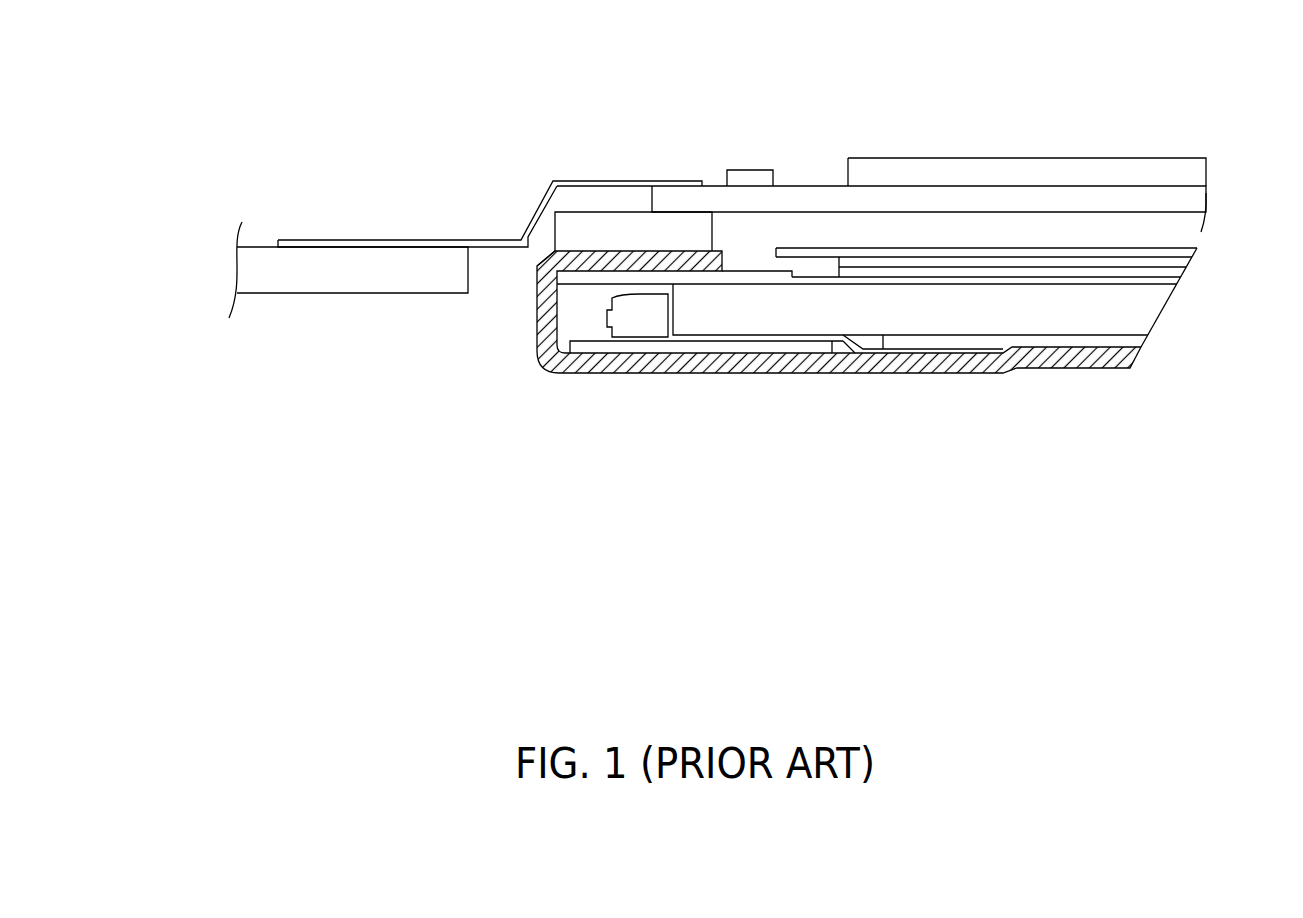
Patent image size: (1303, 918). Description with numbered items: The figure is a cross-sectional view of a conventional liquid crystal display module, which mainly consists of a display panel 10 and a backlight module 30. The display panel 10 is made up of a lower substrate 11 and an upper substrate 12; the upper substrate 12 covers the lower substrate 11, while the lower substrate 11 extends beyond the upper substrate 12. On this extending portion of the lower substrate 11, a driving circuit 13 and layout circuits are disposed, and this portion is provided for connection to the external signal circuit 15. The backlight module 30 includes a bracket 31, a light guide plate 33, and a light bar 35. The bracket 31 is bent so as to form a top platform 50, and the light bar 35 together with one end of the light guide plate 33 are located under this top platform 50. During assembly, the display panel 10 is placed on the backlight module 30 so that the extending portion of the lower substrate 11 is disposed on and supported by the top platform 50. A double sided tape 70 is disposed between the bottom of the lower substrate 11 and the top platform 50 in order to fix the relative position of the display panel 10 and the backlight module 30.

The display panel 10 is at (905, 148).
The lower substrate 11 is at (992, 198).
The upper substrate 12 is at (1067, 175).
The driving circuit 13 is at (749, 176).
The external signal circuit 15 is at (353, 277).
The backlight module 30 is at (895, 352).
The bracket 31 is at (607, 358).
The light guide plate 33 is at (935, 310).
The light bar 35 is at (652, 322).
The top platform 50 is at (553, 259).
The double sided tape 70 is at (602, 232).